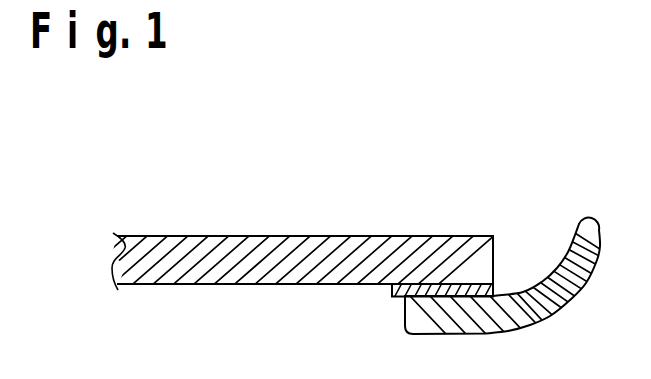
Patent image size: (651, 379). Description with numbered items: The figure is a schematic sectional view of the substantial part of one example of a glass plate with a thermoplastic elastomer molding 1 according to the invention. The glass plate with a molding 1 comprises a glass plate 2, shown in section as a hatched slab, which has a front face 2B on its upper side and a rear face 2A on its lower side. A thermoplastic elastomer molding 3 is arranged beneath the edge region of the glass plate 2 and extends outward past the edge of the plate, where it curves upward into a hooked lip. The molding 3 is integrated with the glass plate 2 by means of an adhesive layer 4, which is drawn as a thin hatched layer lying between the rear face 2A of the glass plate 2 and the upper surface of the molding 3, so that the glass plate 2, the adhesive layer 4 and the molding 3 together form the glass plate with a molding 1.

The glass plate with a thermoplastic elastomer molding 1 is at (373, 204).
The glass plate 2 is at (301, 243).
The rear face 2A is at (297, 285).
The front face 2B is at (433, 234).
The thermoplastic elastomer molding 3 is at (549, 315).
The adhesive layer 4 is at (392, 291).